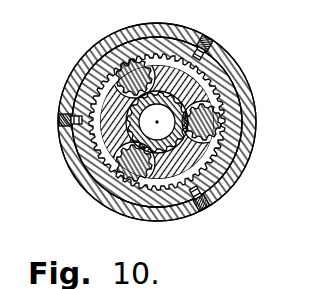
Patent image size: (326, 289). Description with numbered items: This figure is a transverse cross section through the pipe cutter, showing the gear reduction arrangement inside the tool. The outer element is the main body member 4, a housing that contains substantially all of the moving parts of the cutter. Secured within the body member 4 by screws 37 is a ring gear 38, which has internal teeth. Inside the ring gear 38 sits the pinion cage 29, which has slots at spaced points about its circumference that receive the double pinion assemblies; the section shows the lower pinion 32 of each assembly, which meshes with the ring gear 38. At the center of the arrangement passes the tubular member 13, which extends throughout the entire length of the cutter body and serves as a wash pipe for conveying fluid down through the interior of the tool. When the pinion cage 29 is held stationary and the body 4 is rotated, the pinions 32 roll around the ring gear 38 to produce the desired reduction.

The main body member 4 is at (245, 92).
The tubular member 13 is at (181, 103).
The pinion cage 29 is at (228, 173).
The pinion 32 is at (218, 118).
The screws 37 is at (206, 203).
The ring gear 38 is at (222, 158).